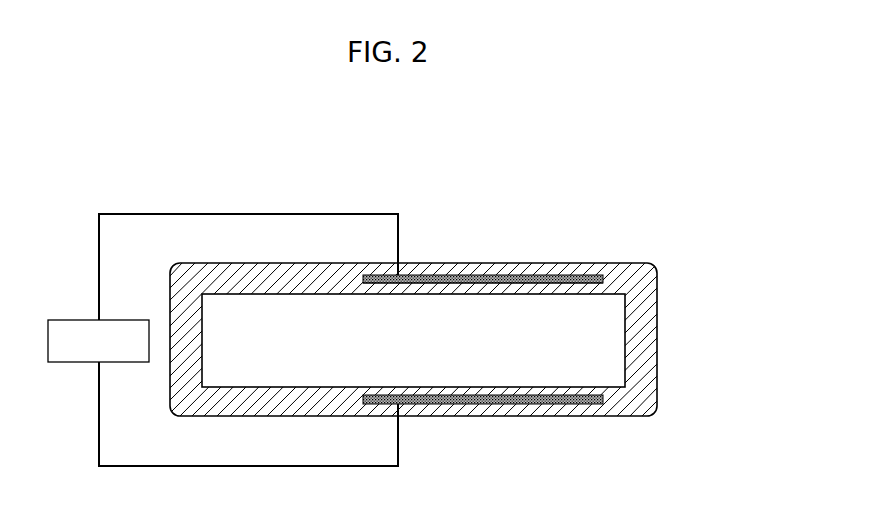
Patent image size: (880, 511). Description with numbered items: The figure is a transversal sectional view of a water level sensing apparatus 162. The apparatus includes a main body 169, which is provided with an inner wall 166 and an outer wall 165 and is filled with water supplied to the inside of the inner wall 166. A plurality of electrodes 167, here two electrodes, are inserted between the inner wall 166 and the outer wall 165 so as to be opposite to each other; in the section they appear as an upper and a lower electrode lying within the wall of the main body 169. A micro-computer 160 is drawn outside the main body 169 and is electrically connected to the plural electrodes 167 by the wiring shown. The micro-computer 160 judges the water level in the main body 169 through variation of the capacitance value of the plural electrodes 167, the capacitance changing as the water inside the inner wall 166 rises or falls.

The micro-computer 160 is at (64, 320).
The water level sensing apparatus 162 is at (653, 234).
The outer wall 165 is at (494, 262).
The inner wall 166 is at (458, 300).
The electrodes 167 is at (520, 283).
The main body 169 is at (640, 394).